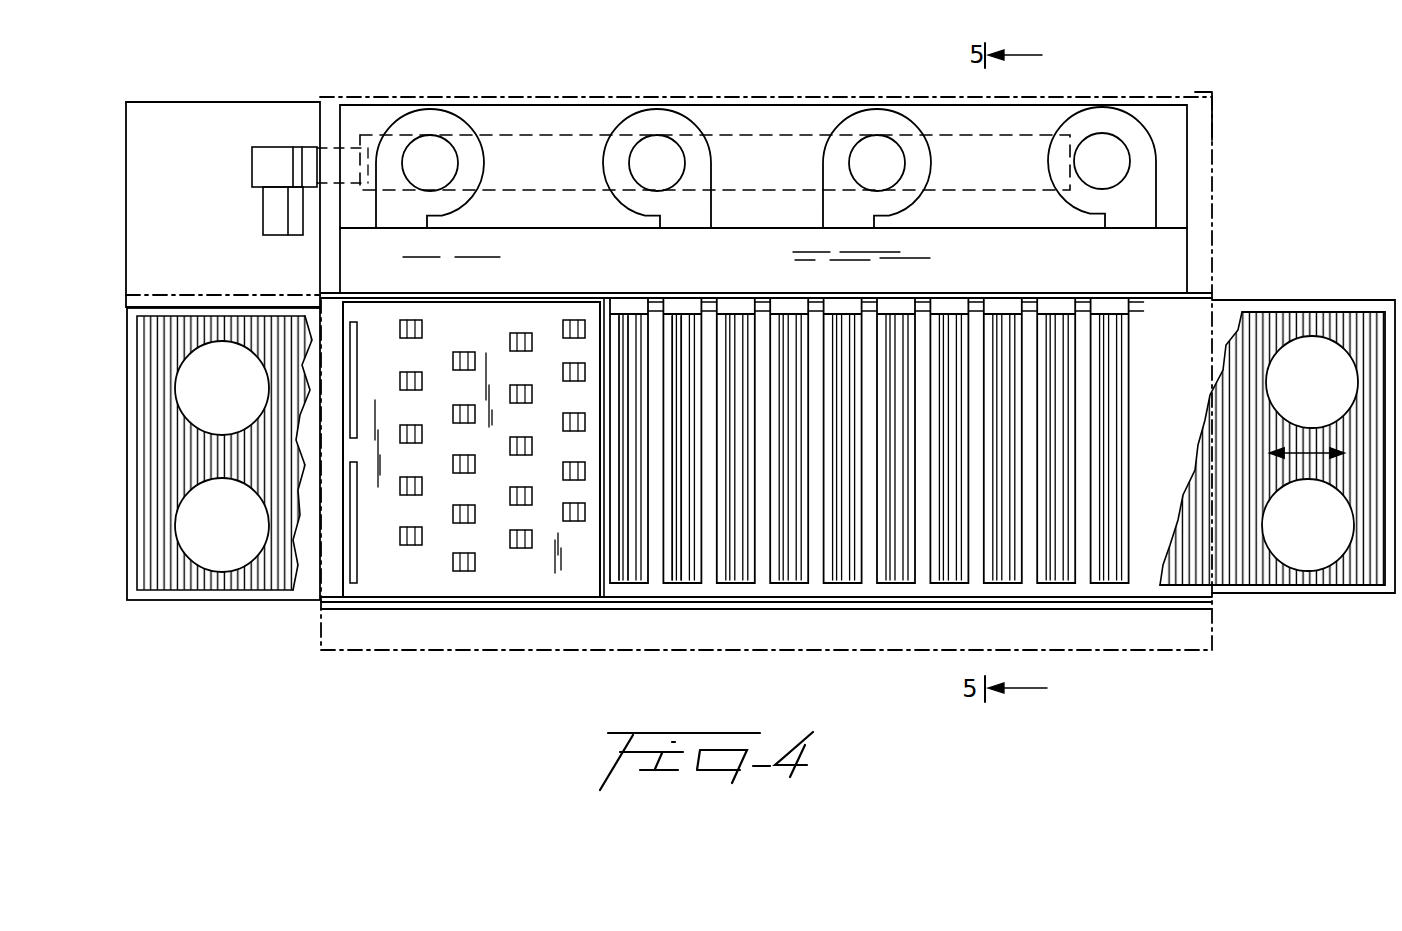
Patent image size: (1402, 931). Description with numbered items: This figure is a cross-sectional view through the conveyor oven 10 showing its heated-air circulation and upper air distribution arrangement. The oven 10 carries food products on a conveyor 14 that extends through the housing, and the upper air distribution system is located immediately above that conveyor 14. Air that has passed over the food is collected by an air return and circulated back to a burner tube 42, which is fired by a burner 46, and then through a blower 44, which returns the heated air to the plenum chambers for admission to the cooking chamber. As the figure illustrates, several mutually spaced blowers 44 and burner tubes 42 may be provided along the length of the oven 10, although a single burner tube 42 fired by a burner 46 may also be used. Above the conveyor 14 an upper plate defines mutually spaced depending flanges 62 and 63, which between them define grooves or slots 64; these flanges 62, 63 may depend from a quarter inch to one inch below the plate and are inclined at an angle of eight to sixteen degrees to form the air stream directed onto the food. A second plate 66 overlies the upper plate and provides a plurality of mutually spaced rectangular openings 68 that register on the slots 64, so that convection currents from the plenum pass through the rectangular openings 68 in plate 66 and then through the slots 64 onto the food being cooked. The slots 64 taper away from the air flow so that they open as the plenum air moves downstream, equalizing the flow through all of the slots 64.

The conveyor oven 10 is at (112, 350).
The conveyor 14 is at (142, 473).
The burner tube 42 is at (532, 137).
The blower 44 is at (432, 122).
The burner 46 is at (292, 160).
The flange 62 is at (622, 581).
The flange 63 is at (635, 581).
The slot 64 is at (452, 562).
The second plate 66 is at (500, 320).
The rectangular opening 68 is at (475, 512).